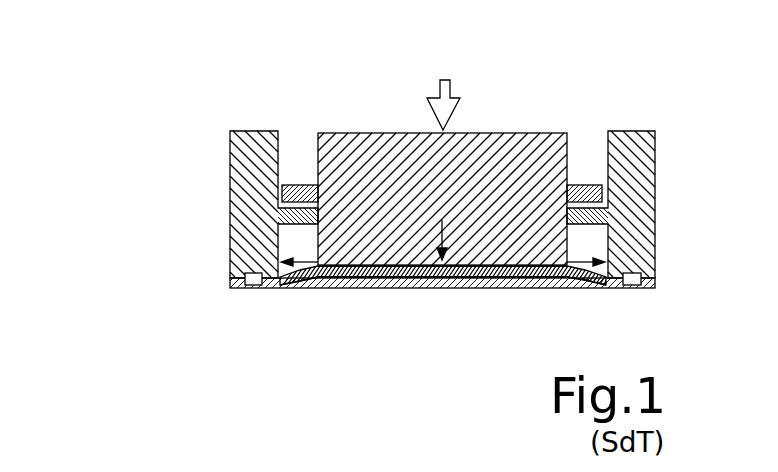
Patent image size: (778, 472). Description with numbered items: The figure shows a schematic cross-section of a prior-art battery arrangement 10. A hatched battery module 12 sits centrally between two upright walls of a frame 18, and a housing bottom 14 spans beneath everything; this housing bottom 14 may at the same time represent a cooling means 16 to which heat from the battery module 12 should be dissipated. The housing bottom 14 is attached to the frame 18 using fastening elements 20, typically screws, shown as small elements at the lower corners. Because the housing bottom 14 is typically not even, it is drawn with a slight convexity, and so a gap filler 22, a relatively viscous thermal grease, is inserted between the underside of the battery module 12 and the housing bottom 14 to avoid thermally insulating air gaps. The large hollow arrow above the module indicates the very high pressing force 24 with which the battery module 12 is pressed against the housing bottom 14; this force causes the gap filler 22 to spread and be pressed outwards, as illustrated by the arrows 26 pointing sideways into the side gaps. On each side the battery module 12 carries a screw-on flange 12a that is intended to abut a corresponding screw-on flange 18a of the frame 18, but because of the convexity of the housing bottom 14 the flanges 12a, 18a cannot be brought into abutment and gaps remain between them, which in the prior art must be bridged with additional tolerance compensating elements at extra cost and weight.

The battery arrangement 10 is at (237, 109).
The battery module 12 is at (512, 180).
The screw-on flange of the battery module 12a is at (298, 185).
The housing bottom 14 is at (452, 303).
The cooling means 16 is at (478, 284).
The frame 18 is at (252, 131).
The screw-on flange of the frame 18a is at (287, 217).
The fastening elements 20 is at (252, 287).
The gap filler 22 is at (330, 276).
The pressing force 24 is at (445, 80).
The arrows indicating spreading of gap filler 26 is at (309, 263).